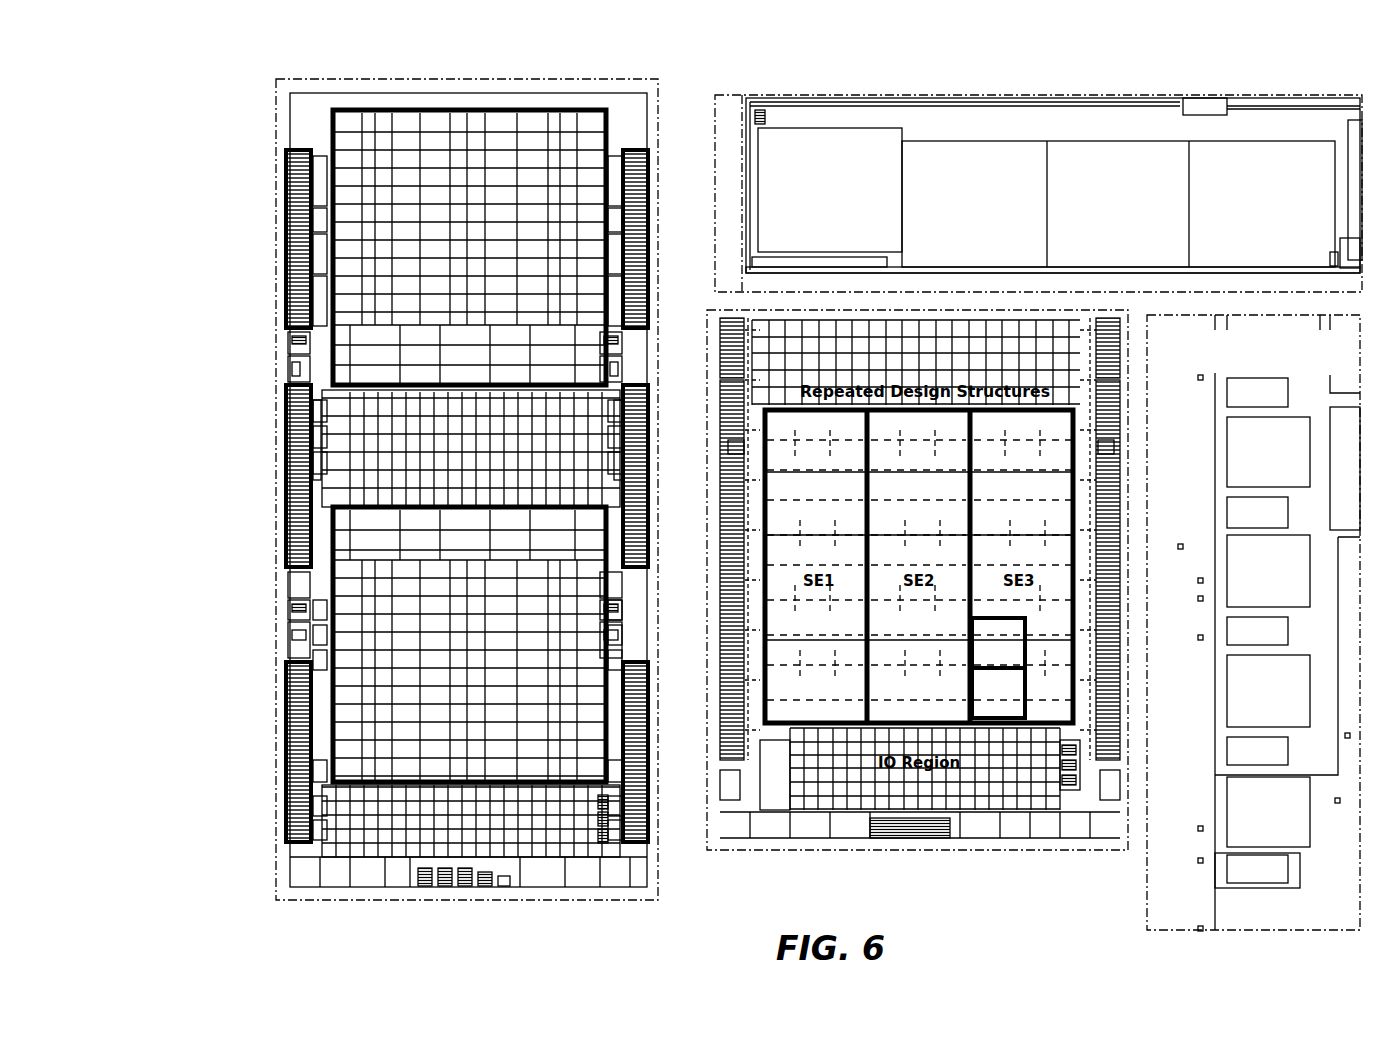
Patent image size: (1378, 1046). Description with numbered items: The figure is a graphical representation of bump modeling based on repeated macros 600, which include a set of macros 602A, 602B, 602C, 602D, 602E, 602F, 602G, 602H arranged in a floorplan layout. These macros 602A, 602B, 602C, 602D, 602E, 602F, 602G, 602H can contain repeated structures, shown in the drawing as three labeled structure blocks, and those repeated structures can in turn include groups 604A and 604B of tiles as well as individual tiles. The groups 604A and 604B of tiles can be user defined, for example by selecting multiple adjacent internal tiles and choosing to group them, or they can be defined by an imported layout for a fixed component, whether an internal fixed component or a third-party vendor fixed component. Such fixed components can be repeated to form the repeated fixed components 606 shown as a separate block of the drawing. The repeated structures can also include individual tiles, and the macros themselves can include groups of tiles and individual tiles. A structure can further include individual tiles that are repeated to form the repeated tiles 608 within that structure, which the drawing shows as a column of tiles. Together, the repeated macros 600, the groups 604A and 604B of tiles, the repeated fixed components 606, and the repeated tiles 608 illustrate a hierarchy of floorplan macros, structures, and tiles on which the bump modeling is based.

The repeated macros 600 is at (240, 166).
The macro 602A is at (286, 258).
The macro 602B is at (286, 450).
The macro 602C is at (286, 745).
The macro 602D is at (505, 110).
The macro 602E is at (333, 588).
The macro 602F is at (650, 253).
The macro 602G is at (650, 452).
The macro component 602H is at (650, 743).
The group of tiles 604A is at (998, 643).
The group of tiles 604B is at (998, 693).
The repeated fixed components 606 is at (1057, 142).
The repeated tiles 608 is at (1290, 371).